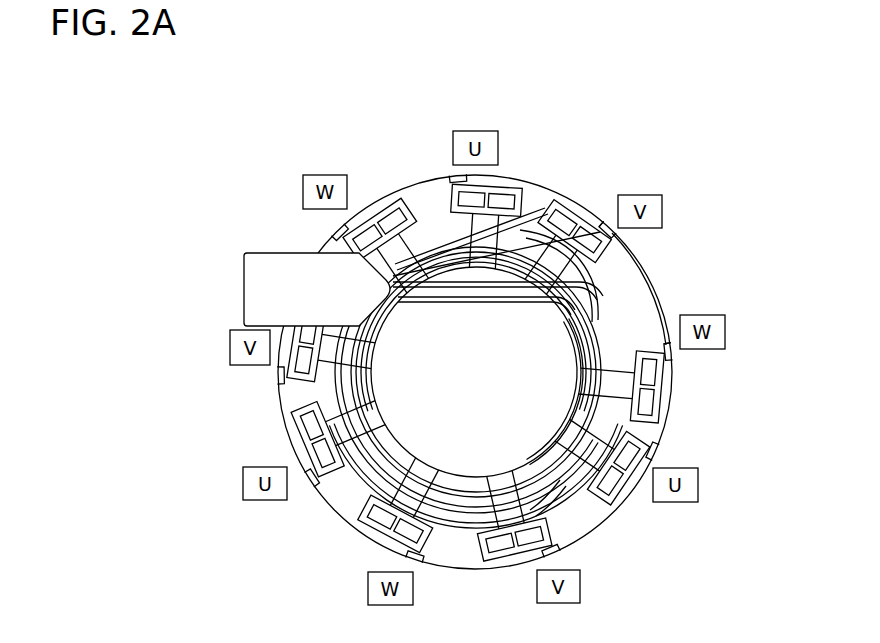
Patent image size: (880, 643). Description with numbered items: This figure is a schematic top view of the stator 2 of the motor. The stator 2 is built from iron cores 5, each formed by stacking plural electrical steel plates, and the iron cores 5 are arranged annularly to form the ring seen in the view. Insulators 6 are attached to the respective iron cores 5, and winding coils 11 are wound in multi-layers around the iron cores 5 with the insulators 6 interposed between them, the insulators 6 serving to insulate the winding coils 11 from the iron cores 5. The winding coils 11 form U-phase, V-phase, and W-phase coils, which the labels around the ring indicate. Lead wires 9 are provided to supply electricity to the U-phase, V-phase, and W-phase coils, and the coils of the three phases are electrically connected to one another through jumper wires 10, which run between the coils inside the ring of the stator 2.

The stator 2 is at (332, 553).
The iron core 5 is at (655, 288).
The insulator 6 is at (645, 430).
The lead wire 9 is at (457, 287).
The jumper wire 10 is at (545, 238).
The winding coil 11 is at (550, 497).